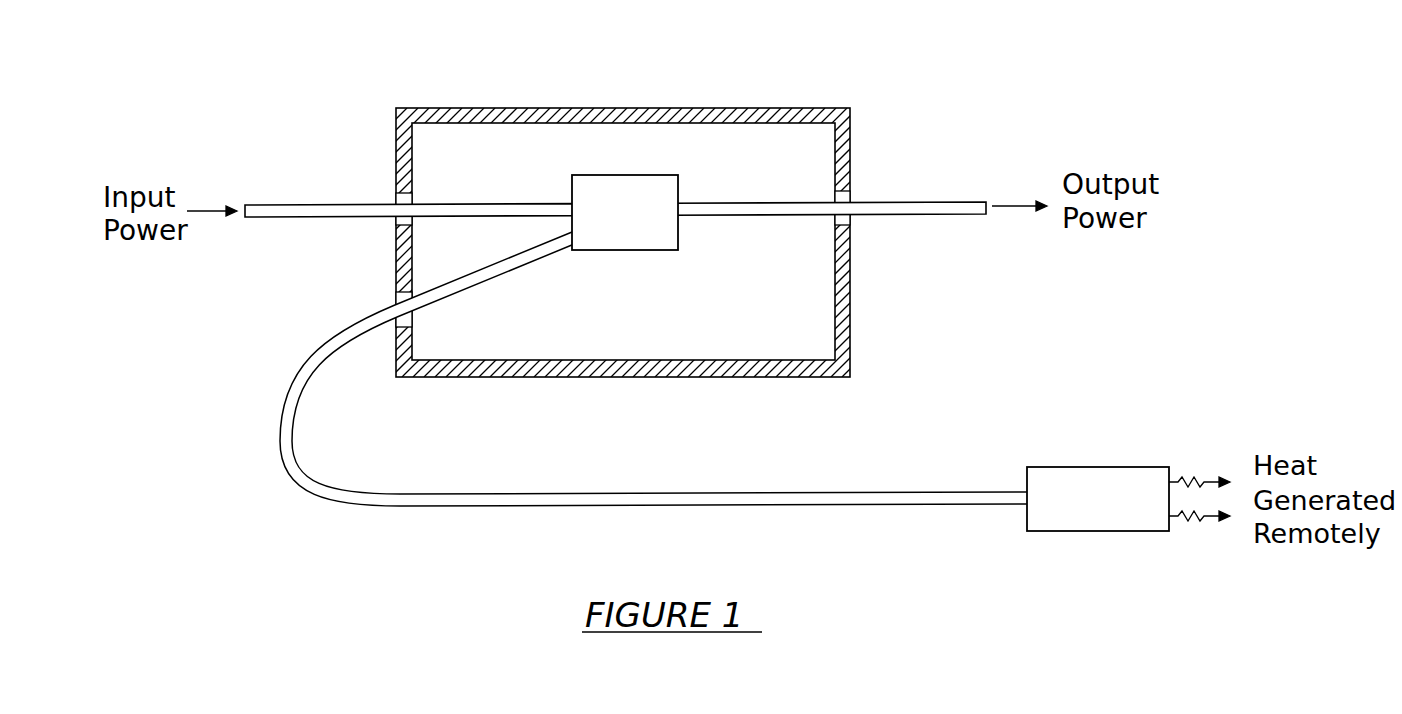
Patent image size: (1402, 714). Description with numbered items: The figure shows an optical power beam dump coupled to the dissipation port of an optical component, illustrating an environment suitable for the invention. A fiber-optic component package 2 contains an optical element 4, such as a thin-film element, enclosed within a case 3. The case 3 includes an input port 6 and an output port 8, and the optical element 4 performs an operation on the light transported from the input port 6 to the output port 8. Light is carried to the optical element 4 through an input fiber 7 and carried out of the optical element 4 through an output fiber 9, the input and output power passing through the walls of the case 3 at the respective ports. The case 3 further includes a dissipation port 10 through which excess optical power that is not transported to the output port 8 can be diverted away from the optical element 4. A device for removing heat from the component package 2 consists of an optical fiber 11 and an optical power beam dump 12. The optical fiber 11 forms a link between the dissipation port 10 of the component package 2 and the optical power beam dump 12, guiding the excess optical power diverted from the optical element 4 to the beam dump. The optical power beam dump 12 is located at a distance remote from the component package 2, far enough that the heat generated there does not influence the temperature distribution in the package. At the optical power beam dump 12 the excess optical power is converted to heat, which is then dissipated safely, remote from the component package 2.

The fiber-optic component package 2 is at (619, 297).
The case 3 is at (765, 108).
The optical element 4 is at (632, 220).
The input port 6 is at (395, 200).
The input fiber 7 is at (305, 203).
The output port 8 is at (852, 202).
The output fiber 9 is at (957, 200).
The dissipation port 10 is at (395, 302).
The optical fiber 11 is at (312, 497).
The optical power beam dump 12 is at (1077, 531).